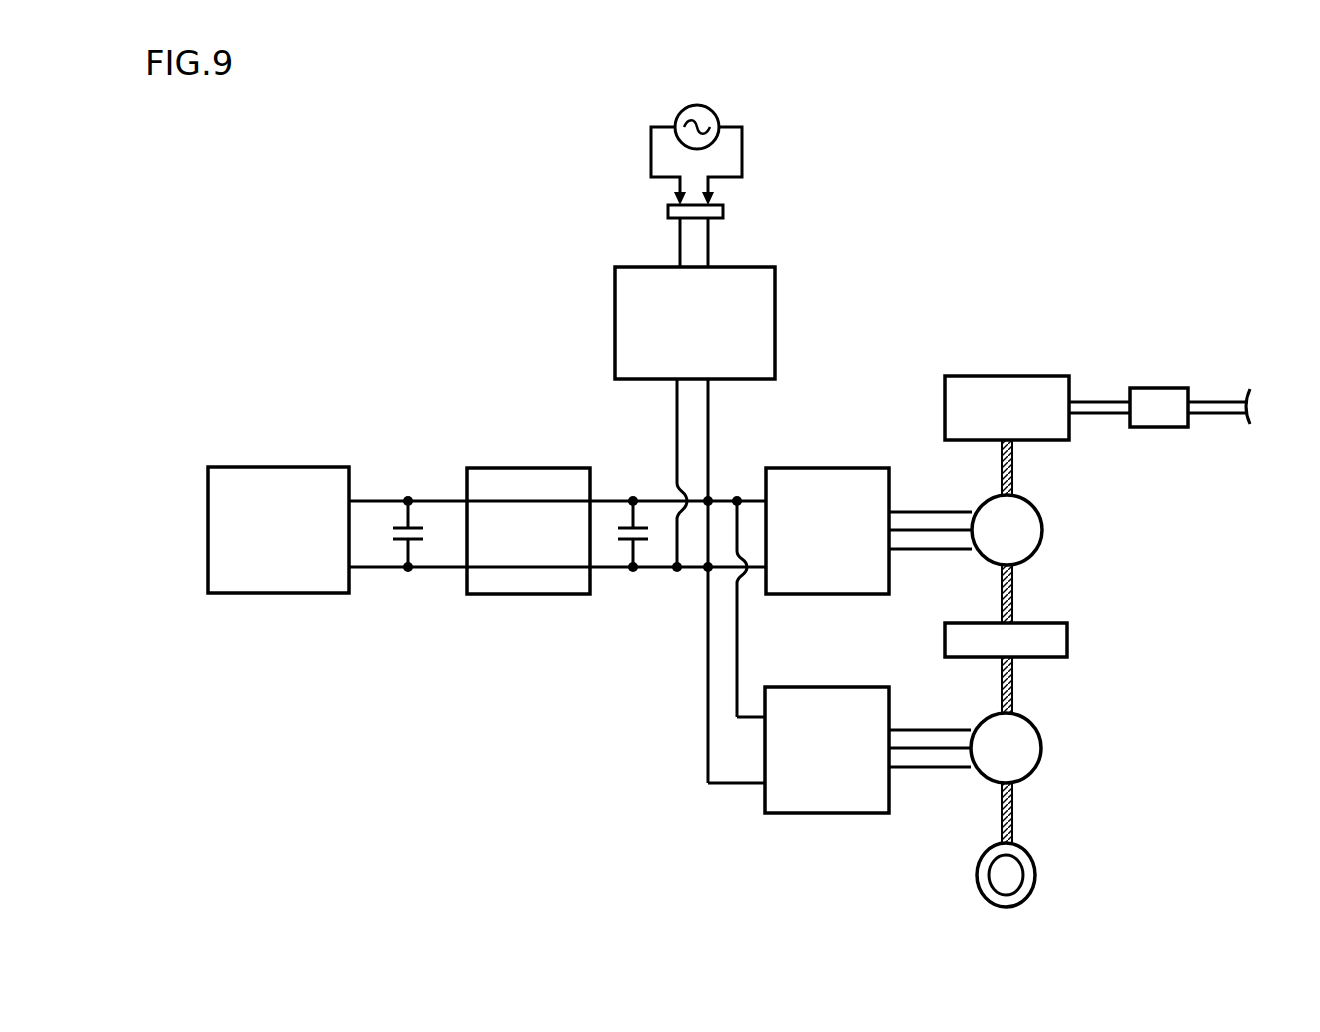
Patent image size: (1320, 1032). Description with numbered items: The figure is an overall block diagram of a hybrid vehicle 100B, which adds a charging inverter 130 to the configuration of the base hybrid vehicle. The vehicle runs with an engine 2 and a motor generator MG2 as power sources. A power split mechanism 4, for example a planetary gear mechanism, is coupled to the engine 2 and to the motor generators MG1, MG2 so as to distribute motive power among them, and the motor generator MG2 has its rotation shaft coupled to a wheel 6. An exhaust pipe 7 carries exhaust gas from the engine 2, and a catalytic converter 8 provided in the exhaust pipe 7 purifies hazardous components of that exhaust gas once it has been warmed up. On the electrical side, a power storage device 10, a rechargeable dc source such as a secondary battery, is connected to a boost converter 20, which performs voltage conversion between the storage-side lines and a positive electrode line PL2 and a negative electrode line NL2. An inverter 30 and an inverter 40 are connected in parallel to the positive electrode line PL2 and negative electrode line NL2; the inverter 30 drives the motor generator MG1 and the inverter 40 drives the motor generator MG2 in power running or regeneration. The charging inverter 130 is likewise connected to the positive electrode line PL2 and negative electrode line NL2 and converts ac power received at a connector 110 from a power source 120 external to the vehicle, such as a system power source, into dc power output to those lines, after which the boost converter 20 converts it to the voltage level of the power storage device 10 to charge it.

The hybrid vehicle 100B is at (346, 173).
The power storage device 10 is at (290, 466).
The boost converter 20 is at (537, 467).
The inverter 30 is at (838, 467).
The inverter 40 is at (836, 686).
The connector 110 is at (724, 213).
The power source 120 is at (712, 106).
The charging inverter 130 is at (776, 323).
The engine 2 is at (1033, 375).
The power split mechanism 4 is at (1038, 623).
The wheel 6 is at (1035, 866).
The exhaust pipe 7 is at (1100, 400).
The catalytic converter 8 is at (1145, 388).
The motor generator MG1 is at (1037, 500).
The motor generator MG2 is at (1034, 722).
The positive electrode line PL2 is at (651, 498).
The negative electrode line NL2 is at (612, 573).